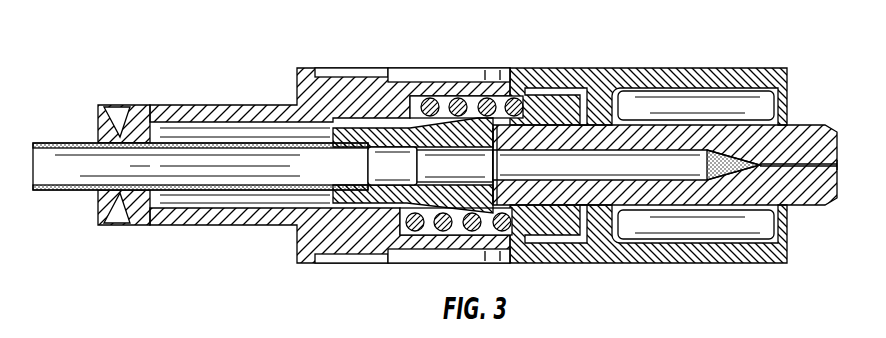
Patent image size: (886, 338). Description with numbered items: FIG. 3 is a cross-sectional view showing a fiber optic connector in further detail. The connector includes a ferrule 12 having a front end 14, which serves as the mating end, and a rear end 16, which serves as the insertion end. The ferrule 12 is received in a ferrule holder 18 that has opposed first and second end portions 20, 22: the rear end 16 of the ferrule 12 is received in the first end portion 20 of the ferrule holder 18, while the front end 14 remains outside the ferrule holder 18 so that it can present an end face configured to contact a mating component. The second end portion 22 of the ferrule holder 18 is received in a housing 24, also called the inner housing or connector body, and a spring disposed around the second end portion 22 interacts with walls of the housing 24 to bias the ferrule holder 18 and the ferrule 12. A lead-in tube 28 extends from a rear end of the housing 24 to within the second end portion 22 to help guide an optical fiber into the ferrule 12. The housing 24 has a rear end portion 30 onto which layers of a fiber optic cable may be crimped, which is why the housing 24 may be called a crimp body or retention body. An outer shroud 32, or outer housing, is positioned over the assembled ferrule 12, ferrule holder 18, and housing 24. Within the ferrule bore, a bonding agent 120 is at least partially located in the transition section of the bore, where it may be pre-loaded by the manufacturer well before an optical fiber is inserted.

The ferrule 12 is at (731, 123).
The front end 14 is at (840, 146).
The rear end 16 is at (497, 193).
The ferrule holder 18 is at (470, 114).
The first end portion 20 is at (548, 95).
The second end portion 22 is at (360, 128).
The housing 24 is at (296, 85).
The lead-in tube 28 is at (47, 141).
The rear end portion 30 is at (97, 105).
The outer shroud 32 is at (645, 68).
The bonding agent 120 is at (727, 167).